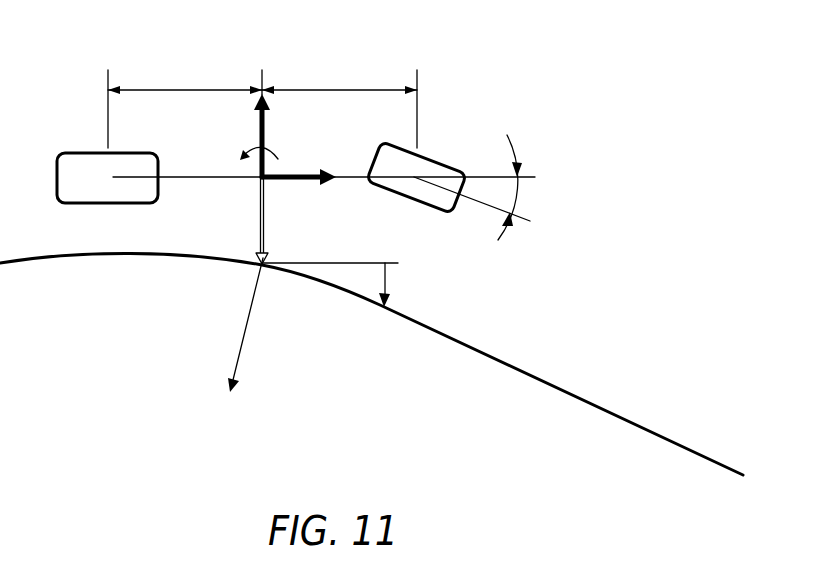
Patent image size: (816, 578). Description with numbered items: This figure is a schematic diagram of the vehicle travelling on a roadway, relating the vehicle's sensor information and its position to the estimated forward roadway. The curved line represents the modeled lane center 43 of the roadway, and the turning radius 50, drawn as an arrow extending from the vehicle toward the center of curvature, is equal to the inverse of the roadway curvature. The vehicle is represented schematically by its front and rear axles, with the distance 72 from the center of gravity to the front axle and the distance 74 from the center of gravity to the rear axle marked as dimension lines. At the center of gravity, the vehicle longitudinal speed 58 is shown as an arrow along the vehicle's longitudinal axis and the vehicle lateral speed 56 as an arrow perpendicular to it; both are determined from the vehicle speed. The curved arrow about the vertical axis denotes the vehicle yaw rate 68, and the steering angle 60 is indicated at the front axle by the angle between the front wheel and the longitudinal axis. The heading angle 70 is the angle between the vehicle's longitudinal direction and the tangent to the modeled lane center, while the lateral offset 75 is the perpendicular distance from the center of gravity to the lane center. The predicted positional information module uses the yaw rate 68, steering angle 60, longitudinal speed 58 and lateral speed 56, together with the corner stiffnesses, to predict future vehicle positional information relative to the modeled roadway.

The modeled lane center 43 is at (505, 370).
The turning radius 50 is at (247, 330).
The vehicle lateral speed 56 is at (265, 137).
The vehicle longitudinal speed 58 is at (285, 180).
The steering angle 60 is at (518, 196).
The vehicle yaw rate 68 is at (268, 146).
The vehicle heading angle 70 is at (385, 282).
The distance from center of gravity to front axle 72 is at (342, 86).
The distance from center of gravity to rear axle 74 is at (185, 86).
The vehicle lateral offset 75 is at (256, 222).